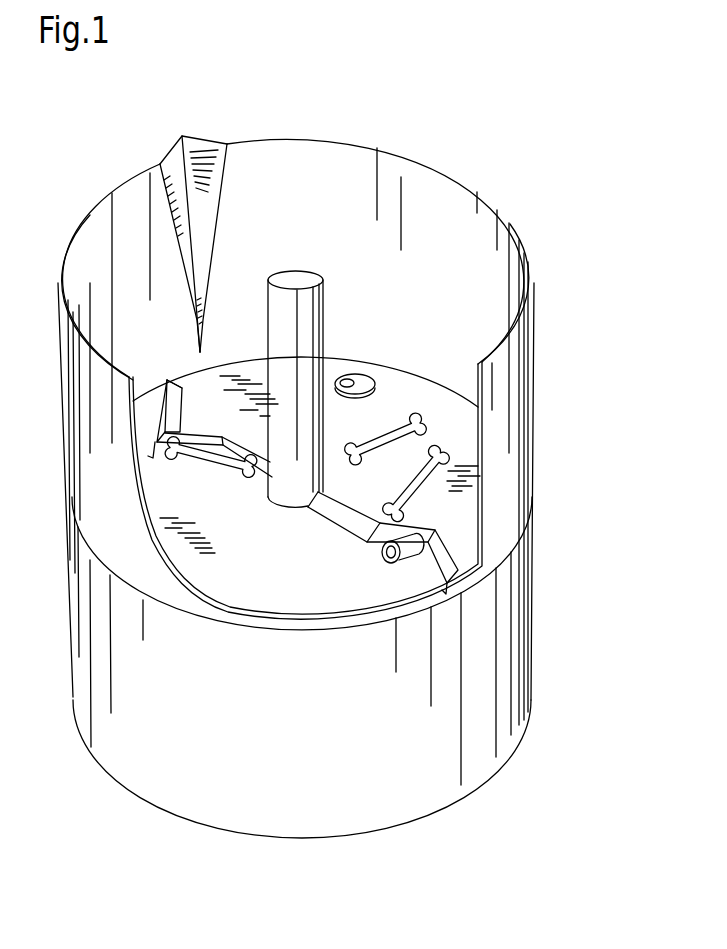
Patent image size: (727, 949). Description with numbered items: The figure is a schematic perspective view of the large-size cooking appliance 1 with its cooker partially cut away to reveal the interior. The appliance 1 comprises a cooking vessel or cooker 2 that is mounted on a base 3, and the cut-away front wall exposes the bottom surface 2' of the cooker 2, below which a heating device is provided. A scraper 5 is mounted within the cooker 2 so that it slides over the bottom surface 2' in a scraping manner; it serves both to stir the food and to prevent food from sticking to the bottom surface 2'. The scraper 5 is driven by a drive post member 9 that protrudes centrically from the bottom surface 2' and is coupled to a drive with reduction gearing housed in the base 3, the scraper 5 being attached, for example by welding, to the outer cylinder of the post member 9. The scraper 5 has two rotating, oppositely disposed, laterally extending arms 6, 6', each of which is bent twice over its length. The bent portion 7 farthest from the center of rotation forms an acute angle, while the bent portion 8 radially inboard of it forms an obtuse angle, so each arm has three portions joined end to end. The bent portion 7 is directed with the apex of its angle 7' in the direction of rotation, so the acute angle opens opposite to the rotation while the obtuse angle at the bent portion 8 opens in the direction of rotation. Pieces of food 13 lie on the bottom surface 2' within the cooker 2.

The large-size cooking appliance 1 is at (437, 125).
The cooking vessel or cooker 2 is at (319, 436).
The bottom surface 2' is at (306, 480).
The base 3 is at (533, 625).
The scraper 5 is at (264, 466).
The arm 6 is at (189, 389).
The arm 6' is at (450, 614).
The bent portion 7 is at (315, 485).
The apex of angle 7' is at (153, 466).
The bent portion 8 is at (223, 437).
The drive post member 9 is at (322, 329).
The bones 13 is at (393, 507).